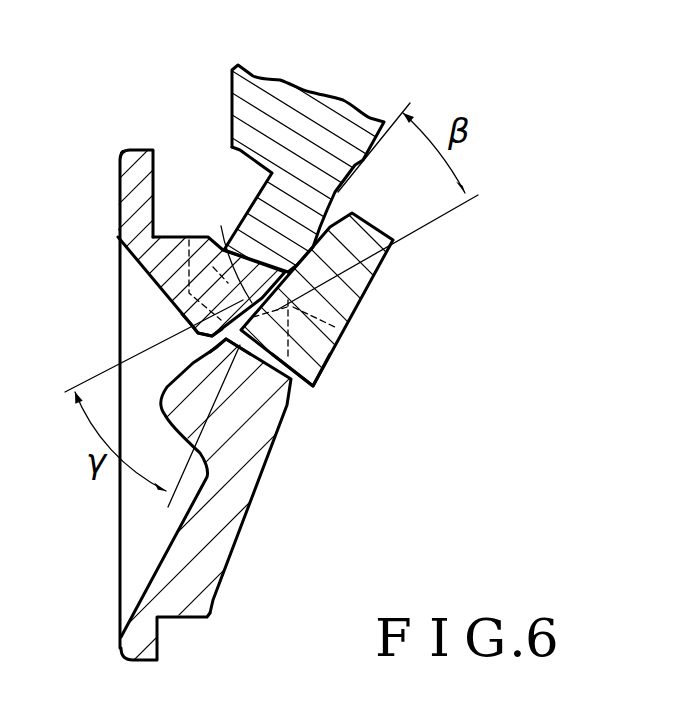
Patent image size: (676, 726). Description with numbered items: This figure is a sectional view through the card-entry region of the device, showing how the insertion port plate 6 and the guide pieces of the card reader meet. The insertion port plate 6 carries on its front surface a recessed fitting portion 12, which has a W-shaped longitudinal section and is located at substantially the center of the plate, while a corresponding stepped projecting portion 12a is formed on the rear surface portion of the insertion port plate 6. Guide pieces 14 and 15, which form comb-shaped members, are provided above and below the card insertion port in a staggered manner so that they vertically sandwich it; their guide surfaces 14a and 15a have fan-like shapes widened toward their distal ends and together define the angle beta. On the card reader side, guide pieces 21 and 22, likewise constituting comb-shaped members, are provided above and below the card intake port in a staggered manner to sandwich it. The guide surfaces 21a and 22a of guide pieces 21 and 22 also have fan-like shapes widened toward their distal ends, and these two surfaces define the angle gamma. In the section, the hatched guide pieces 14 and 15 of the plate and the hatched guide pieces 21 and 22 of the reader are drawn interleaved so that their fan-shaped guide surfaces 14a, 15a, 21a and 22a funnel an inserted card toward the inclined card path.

The insertion port plate 6 is at (104, 176).
The recessed fitting portion 12 is at (168, 308).
The stepped projecting portion 12a is at (186, 618).
The guide piece 14 is at (167, 236).
The guide surface 14a is at (208, 333).
The guide piece 15 is at (266, 449).
The guide surface 15a is at (230, 333).
The guide piece 21 is at (262, 245).
The guide surface 21a is at (222, 248).
The guide piece 22 is at (374, 278).
The guide surface 22a is at (318, 363).